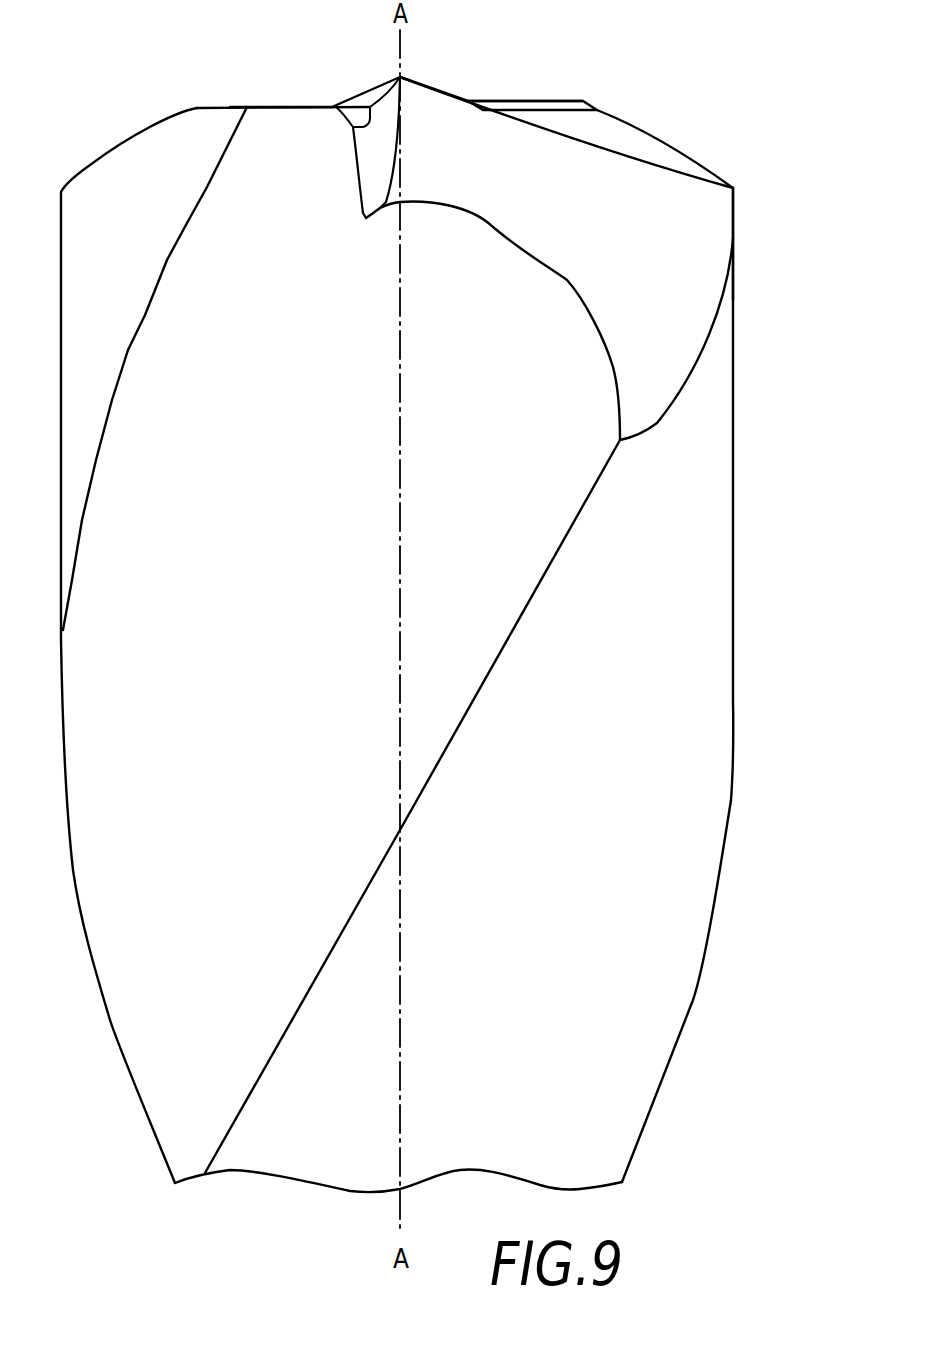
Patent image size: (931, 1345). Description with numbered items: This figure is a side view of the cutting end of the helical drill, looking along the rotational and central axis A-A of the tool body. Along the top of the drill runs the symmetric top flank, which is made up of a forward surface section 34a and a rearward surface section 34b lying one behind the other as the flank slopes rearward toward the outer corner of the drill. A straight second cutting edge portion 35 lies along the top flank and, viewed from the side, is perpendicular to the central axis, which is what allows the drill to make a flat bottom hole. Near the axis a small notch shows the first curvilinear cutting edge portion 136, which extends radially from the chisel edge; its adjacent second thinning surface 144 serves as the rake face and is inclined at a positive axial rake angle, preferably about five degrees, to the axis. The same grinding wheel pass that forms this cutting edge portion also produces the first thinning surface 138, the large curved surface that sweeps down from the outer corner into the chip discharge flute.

The second cutting edge portion 35 is at (287, 104).
The forward surface section 34a is at (547, 102).
The rearward surface section 34b is at (630, 138).
The first curvilinear cutting edge portion 136 is at (353, 127).
The first thinning surface 138 is at (712, 215).
The second thinning surface 144 is at (372, 185).